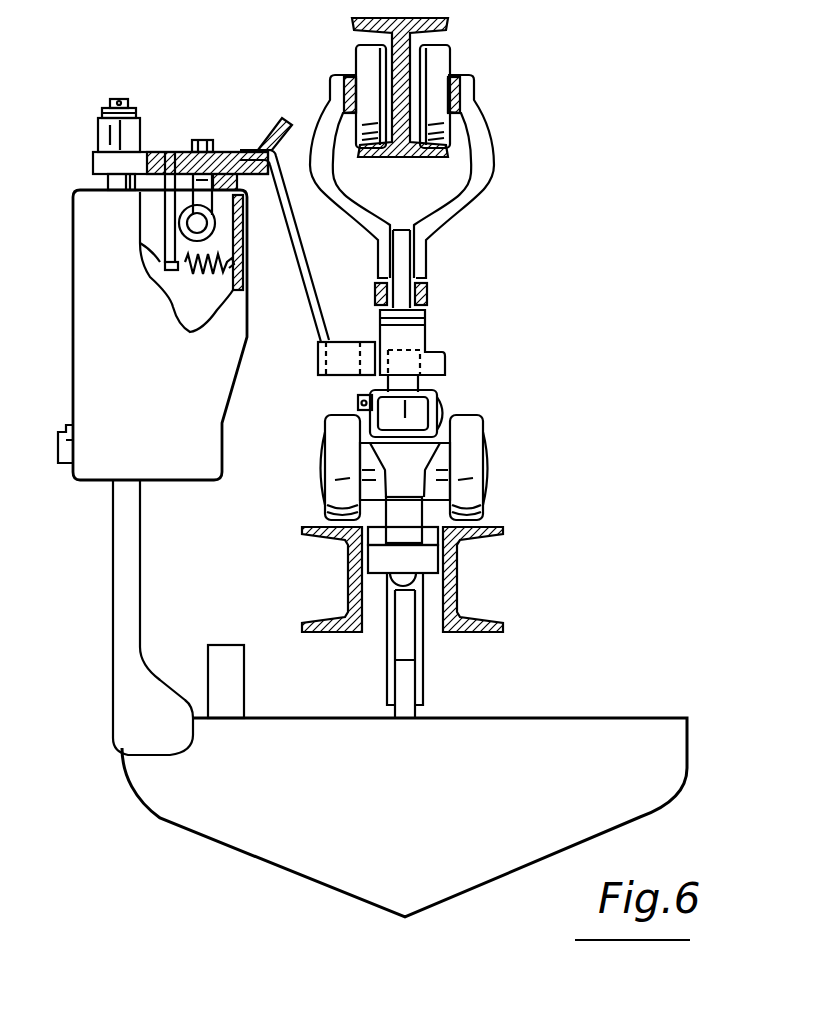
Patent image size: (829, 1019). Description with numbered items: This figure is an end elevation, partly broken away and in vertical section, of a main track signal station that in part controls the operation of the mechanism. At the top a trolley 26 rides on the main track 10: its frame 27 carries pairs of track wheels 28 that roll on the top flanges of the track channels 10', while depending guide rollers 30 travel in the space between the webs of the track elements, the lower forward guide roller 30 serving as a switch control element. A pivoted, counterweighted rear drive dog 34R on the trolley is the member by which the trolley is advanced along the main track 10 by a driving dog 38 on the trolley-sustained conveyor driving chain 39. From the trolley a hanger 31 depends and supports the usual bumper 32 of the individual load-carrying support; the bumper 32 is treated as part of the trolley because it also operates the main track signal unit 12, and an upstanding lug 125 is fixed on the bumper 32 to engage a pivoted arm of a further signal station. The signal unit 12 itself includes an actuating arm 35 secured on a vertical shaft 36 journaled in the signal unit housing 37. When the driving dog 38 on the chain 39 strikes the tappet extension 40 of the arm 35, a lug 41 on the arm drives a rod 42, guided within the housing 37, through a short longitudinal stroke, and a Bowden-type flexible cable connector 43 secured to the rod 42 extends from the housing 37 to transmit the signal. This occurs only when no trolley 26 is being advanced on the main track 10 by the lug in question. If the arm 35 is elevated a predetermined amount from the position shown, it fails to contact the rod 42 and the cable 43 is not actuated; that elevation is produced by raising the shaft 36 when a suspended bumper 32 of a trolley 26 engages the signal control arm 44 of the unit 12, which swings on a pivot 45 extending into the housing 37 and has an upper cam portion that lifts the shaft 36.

The main track 10 is at (408, 579).
The track channel 10' is at (411, 621).
The main track signal unit 12 is at (150, 427).
The trolley 26 is at (410, 477).
The frame 27 is at (400, 487).
The track wheels 28 is at (332, 488).
The guide roller 30 is at (433, 558).
The hanger 31 is at (418, 673).
The bumper 32 is at (267, 843).
The rear drive dog 34R is at (425, 384).
The actuating arm 35 is at (252, 172).
The vertical shaft 36 is at (108, 185).
The signal unit housing 37 is at (86, 328).
The driving dog 38 is at (418, 342).
The conveyor driving chain 39 is at (428, 290).
The tappet extension 40 is at (343, 370).
The lug 41 is at (193, 178).
The rod 42 is at (190, 224).
The flexible cable connector 43 is at (262, 148).
The signal control arm 44 is at (137, 608).
The pivot 45 is at (58, 455).
The upstanding lug 125 is at (232, 693).